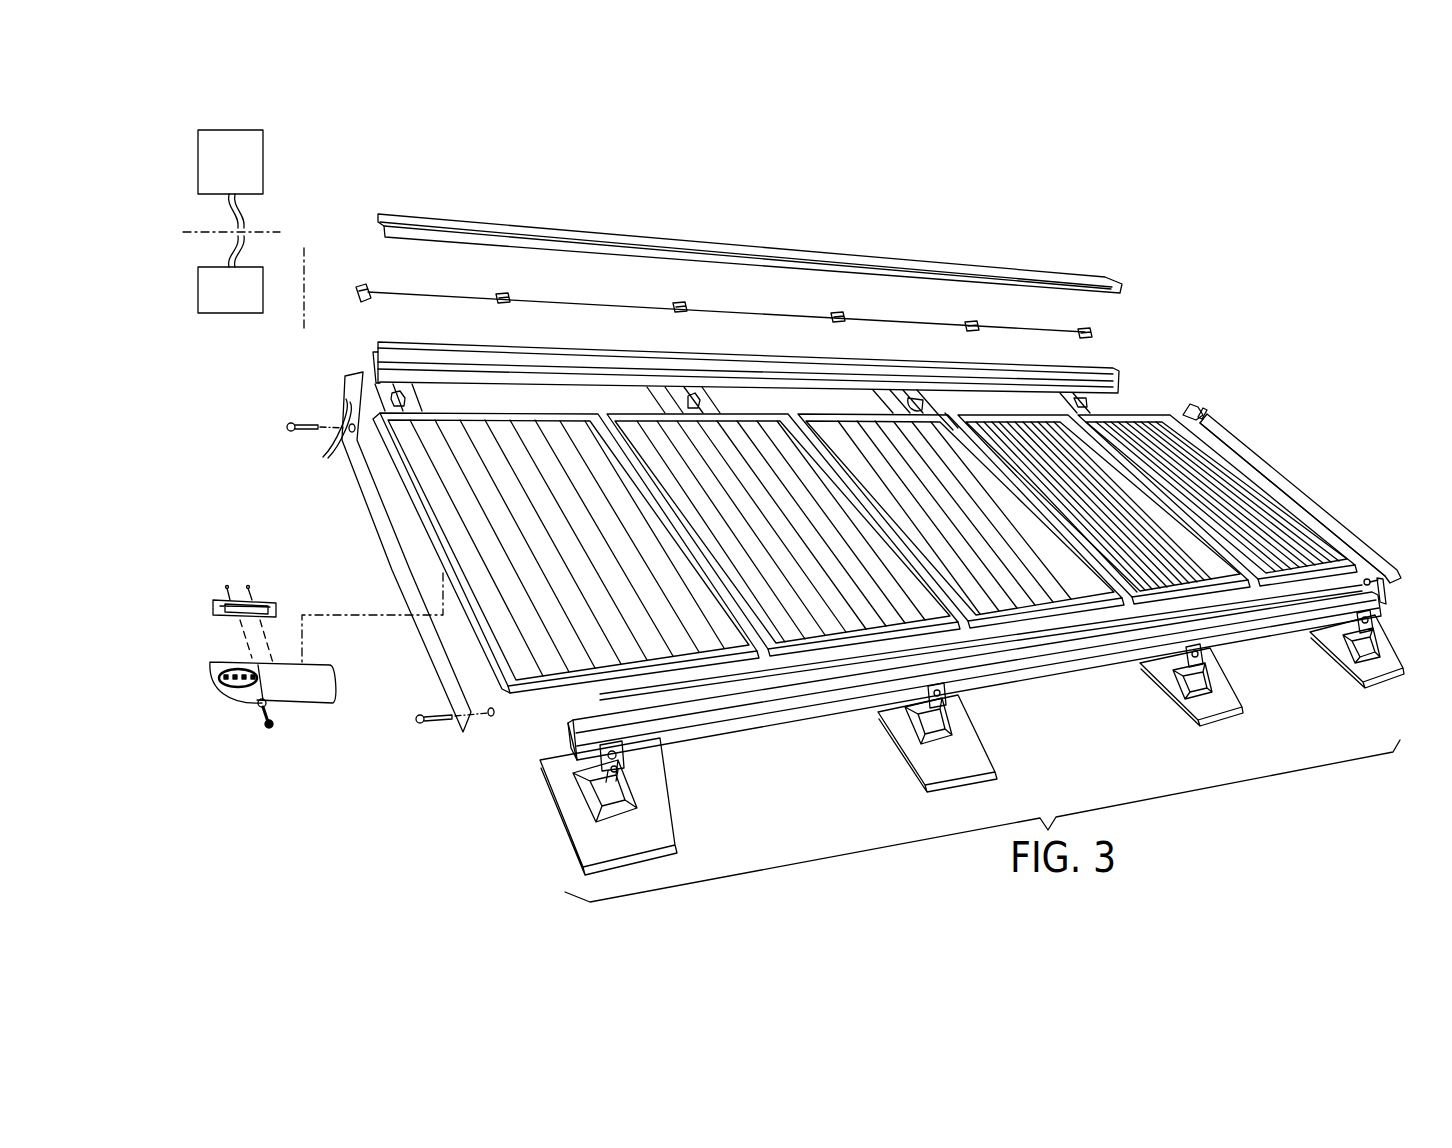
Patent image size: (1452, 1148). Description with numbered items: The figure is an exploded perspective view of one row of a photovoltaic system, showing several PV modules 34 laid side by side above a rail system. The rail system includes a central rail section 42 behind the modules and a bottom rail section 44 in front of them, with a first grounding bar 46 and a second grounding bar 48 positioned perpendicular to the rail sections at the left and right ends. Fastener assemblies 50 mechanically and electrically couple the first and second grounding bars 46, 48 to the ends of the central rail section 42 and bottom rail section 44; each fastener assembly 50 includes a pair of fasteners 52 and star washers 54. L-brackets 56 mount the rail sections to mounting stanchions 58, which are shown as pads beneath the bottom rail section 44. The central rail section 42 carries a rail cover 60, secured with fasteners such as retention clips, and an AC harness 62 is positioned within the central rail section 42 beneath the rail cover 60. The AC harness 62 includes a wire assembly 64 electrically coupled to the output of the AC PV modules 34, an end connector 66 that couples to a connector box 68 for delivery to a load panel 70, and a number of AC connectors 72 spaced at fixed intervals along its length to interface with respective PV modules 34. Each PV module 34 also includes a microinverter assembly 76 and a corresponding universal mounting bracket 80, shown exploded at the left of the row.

The PV module 34 is at (793, 622).
The central rail section 42 is at (1110, 372).
The bottom rail section 44 is at (1112, 653).
The first grounding bar 46 is at (372, 503).
The second grounding bar 48 is at (1304, 493).
The fastener assembly 50 is at (351, 600).
The fastener 52 is at (288, 426).
The star washer 54 is at (340, 426).
The L-bracket 56 is at (622, 763).
The mounting stanchion 58 is at (645, 835).
The rail cover 60 is at (1043, 275).
The AC harness 62 is at (736, 268).
The wire assembly 64 is at (588, 309).
The end connector 66 is at (360, 298).
The connector box 68 is at (198, 290).
The load panel 70 is at (262, 137).
The AC connector 72 is at (508, 296).
The microinverter assembly 76 is at (224, 718).
The universal mounting bracket 80 is at (212, 604).